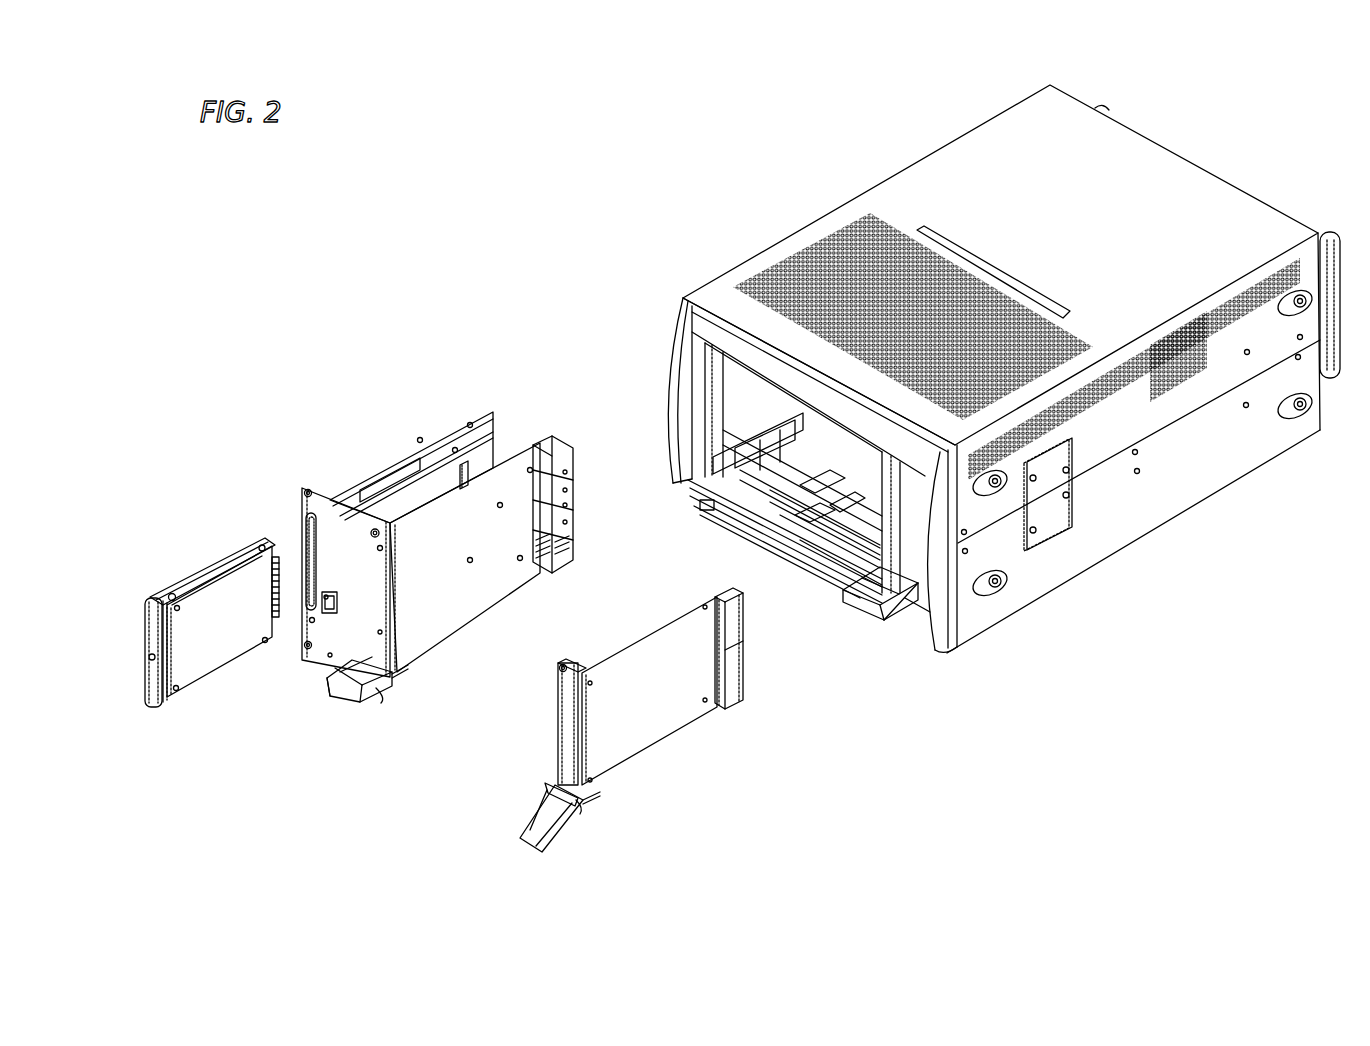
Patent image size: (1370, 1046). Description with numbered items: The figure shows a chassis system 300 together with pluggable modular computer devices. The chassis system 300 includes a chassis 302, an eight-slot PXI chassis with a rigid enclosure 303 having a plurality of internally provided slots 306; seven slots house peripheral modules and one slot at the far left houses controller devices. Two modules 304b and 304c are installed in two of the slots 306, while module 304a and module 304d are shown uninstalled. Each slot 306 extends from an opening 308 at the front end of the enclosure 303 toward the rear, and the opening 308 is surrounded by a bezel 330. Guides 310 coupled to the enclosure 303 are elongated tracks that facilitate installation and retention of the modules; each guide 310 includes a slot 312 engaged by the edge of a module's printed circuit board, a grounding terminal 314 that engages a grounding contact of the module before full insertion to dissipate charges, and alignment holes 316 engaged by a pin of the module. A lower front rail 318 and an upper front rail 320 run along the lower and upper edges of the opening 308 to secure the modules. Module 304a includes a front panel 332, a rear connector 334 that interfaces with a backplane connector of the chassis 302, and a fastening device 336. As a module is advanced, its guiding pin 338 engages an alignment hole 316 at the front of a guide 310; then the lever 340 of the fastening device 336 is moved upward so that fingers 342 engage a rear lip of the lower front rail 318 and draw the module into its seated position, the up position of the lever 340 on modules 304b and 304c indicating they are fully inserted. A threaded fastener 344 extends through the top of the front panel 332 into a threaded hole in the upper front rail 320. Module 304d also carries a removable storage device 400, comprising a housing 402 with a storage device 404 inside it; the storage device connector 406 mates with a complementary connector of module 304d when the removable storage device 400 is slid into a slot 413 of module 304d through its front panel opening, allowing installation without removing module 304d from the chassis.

The chassis system 300 is at (1213, 130).
The chassis 302 is at (1243, 187).
The enclosure 303 is at (1075, 153).
The module 304a is at (603, 643).
The module 304b is at (846, 600).
The module 304c is at (880, 618).
The module 304d is at (293, 462).
The slots 306 is at (805, 527).
The opening 308 is at (730, 418).
The guides 310 is at (870, 552).
The slot 312 is at (823, 500).
The grounding terminal 314 is at (810, 493).
The alignment holes 316 is at (808, 524).
The lower front rail 318 is at (690, 487).
The upper front rail 320 is at (697, 383).
The bezel 330 is at (690, 317).
The front panel 332 is at (558, 733).
The rear connector 334 is at (560, 570).
The fastening device 336 is at (362, 703).
The guiding pin 338 is at (407, 667).
The lever 340 is at (337, 687).
The fingers 342 is at (392, 678).
The threaded fastener 344 is at (305, 490).
The removable storage device 400 is at (173, 565).
The housing 402 is at (155, 717).
The storage device 404 is at (197, 668).
The storage device connector 406 is at (277, 597).
The slot 413 is at (310, 603).